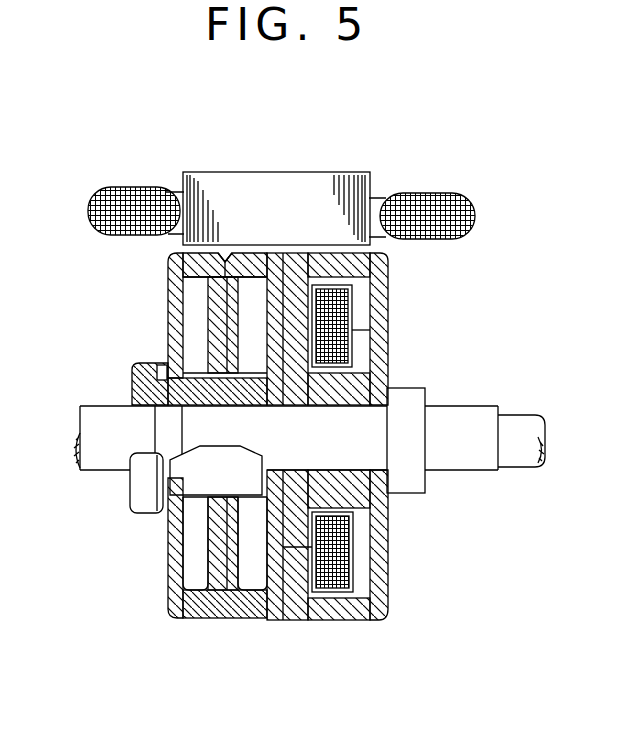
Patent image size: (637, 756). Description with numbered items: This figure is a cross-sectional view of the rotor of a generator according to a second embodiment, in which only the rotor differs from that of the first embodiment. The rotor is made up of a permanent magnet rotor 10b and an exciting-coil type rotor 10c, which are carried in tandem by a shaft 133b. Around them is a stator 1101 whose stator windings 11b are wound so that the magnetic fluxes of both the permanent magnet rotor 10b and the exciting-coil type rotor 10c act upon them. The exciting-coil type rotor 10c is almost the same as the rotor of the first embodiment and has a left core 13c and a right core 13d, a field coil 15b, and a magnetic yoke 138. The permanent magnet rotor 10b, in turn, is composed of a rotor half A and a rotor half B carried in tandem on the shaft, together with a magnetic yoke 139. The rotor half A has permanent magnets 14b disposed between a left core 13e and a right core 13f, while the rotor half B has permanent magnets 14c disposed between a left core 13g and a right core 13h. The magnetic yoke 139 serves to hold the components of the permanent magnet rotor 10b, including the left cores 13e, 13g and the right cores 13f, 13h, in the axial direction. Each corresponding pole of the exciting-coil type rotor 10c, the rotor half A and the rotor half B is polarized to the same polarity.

The stator 1101 is at (240, 166).
The rotor half B is at (243, 272).
The rotor half A is at (164, 296).
The stator windings 11b is at (425, 212).
The right core 13h is at (270, 295).
The left core 13c is at (288, 305).
The permanent magnet rotor 10b is at (158, 329).
The right core 13d is at (368, 362).
The magnetic yoke 138 is at (338, 395).
The magnetic yoke 139 is at (135, 385).
The shaft 133b is at (470, 437).
The left core 13e is at (175, 530).
The permanent magnets 14b is at (198, 572).
The exciting-coil type rotor 10c is at (407, 562).
The right core 13f is at (183, 620).
The left core 13g is at (233, 620).
The permanent magnets 14c is at (278, 575).
The field coil 15b is at (330, 597).